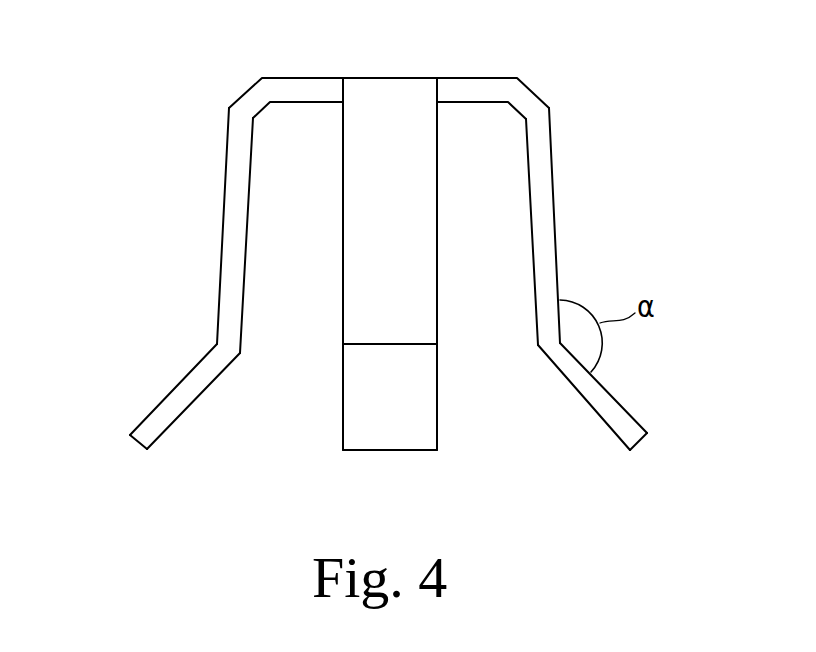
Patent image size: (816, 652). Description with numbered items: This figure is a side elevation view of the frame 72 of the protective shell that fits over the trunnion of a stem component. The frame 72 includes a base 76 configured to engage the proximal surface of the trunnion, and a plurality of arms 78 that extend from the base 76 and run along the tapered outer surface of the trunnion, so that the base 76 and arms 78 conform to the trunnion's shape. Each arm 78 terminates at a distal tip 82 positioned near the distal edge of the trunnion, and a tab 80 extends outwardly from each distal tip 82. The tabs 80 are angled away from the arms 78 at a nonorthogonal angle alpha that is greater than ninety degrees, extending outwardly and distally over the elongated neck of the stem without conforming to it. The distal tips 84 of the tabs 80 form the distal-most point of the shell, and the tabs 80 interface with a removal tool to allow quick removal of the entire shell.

The frame 72 is at (388, 272).
The base 76 is at (389, 74).
The arms 78 is at (364, 215).
The tab 80 is at (389, 396).
The distal tip of arm 82 is at (351, 361).
The distal tips of tabs 84 is at (388, 472).